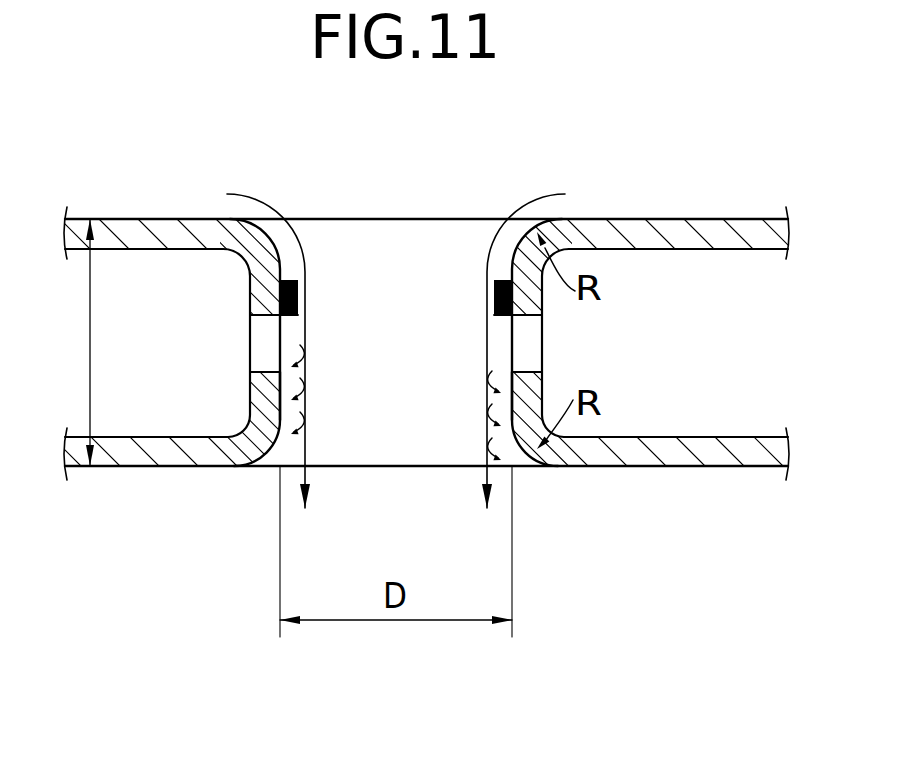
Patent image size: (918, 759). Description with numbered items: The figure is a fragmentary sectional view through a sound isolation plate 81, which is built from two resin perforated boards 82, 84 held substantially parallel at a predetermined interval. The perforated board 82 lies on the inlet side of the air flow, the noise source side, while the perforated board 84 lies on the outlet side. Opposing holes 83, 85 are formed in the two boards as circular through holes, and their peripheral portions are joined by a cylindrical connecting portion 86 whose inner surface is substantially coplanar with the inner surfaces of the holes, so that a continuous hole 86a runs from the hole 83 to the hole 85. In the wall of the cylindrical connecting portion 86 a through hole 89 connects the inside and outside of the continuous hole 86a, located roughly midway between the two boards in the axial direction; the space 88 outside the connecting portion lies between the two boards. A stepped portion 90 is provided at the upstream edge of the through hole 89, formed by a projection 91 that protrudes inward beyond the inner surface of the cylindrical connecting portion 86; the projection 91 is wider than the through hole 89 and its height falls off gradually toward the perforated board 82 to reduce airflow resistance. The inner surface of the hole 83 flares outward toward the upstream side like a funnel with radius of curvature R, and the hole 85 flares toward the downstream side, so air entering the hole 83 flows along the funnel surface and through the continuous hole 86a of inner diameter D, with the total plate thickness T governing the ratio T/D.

The sound isolation plate 81 is at (705, 181).
The perforated board 82 is at (765, 219).
The hole 83 is at (355, 219).
The perforated board 84 is at (725, 467).
The hole 85 is at (400, 467).
The cylindrical connecting portion 86 is at (252, 288).
The continuous hole 86a is at (283, 383).
The cavity / flow channel 88 is at (150, 361).
The through hole 89 is at (256, 317).
The stepped portion 90 is at (298, 329).
The projection 91 is at (298, 283).